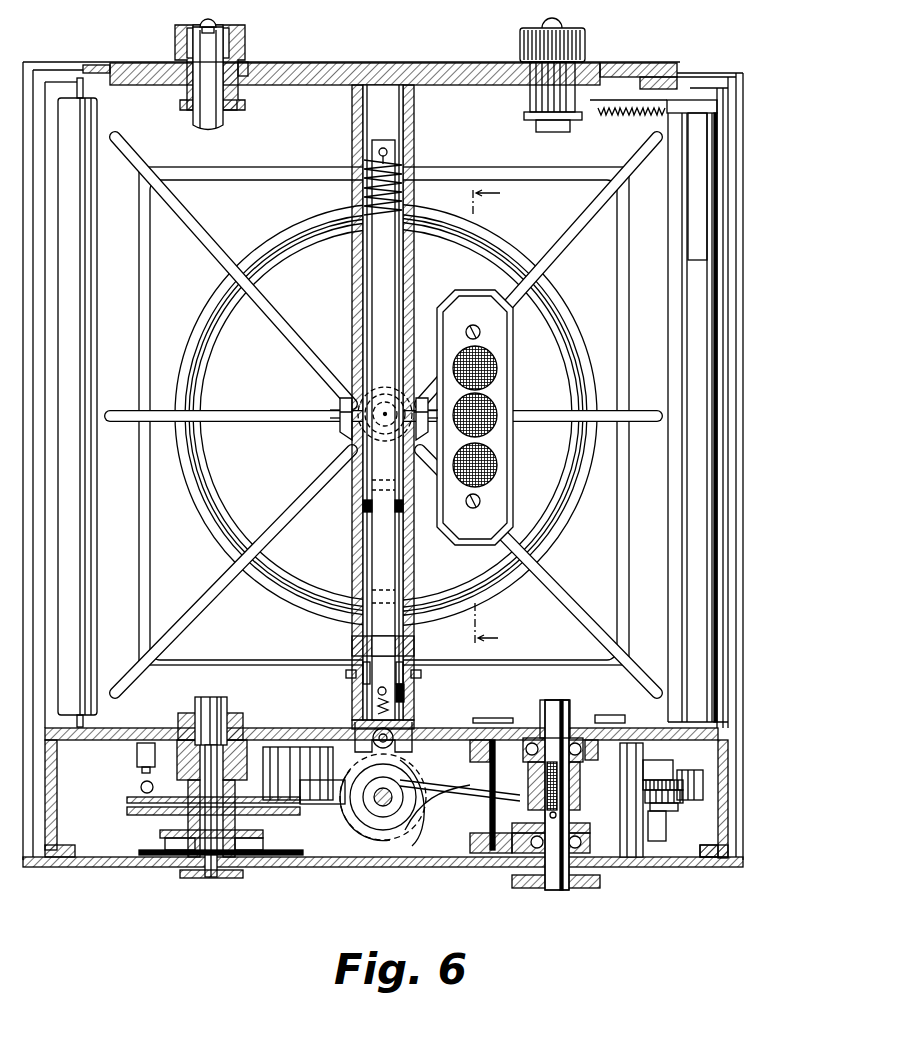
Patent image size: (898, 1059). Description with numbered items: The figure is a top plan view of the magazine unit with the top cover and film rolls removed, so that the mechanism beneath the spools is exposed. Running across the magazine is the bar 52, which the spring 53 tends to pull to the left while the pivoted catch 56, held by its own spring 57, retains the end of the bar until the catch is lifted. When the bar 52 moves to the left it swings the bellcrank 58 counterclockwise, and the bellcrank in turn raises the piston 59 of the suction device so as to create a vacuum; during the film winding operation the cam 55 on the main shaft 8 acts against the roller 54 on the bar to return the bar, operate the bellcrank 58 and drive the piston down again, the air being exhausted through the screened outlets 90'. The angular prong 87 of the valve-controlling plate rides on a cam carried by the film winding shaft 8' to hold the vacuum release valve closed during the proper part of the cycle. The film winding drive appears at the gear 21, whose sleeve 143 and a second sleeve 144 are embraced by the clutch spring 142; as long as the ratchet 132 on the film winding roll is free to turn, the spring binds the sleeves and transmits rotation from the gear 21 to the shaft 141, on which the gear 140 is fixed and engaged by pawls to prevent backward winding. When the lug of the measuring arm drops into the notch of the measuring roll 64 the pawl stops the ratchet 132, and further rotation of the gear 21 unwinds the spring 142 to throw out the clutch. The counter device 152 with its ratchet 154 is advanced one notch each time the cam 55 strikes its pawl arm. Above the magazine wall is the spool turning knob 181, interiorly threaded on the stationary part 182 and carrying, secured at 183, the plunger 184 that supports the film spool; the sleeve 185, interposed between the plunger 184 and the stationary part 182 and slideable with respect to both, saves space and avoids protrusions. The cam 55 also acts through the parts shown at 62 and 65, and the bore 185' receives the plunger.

The main shaft 8 is at (475, 419).
The film winding shaft 8' is at (346, 853).
The gear 21 is at (580, 775).
The bar 52 is at (388, 292).
The spring 53 is at (404, 206).
The roller 54 is at (420, 715).
The cam 55 is at (387, 842).
The pivoted catch 56 is at (404, 696).
The spring 57 is at (372, 700).
The bellcrank 58 is at (342, 430).
The piston 59 is at (480, 268).
The link 62 is at (470, 800).
The measuring roll 64 is at (690, 822).
The bearing 65 is at (680, 845).
The angular prong 87 is at (428, 830).
The screened outlets 90' is at (495, 417).
The ratchet 132 is at (600, 800).
The gear 140 is at (612, 850).
The shaft 141 is at (550, 870).
The spring 142 is at (600, 770).
The sleeve 143 is at (576, 740).
The sleeve 144 is at (506, 866).
The counter device 152 is at (135, 851).
The ratchet 154 is at (135, 805).
The knob 181 is at (246, 42).
The stationary part 182 is at (248, 66).
The securing point 183 is at (204, 22).
The plunger 184 is at (225, 122).
The sleeve 185 is at (243, 100).
The bore 185' is at (240, 30).